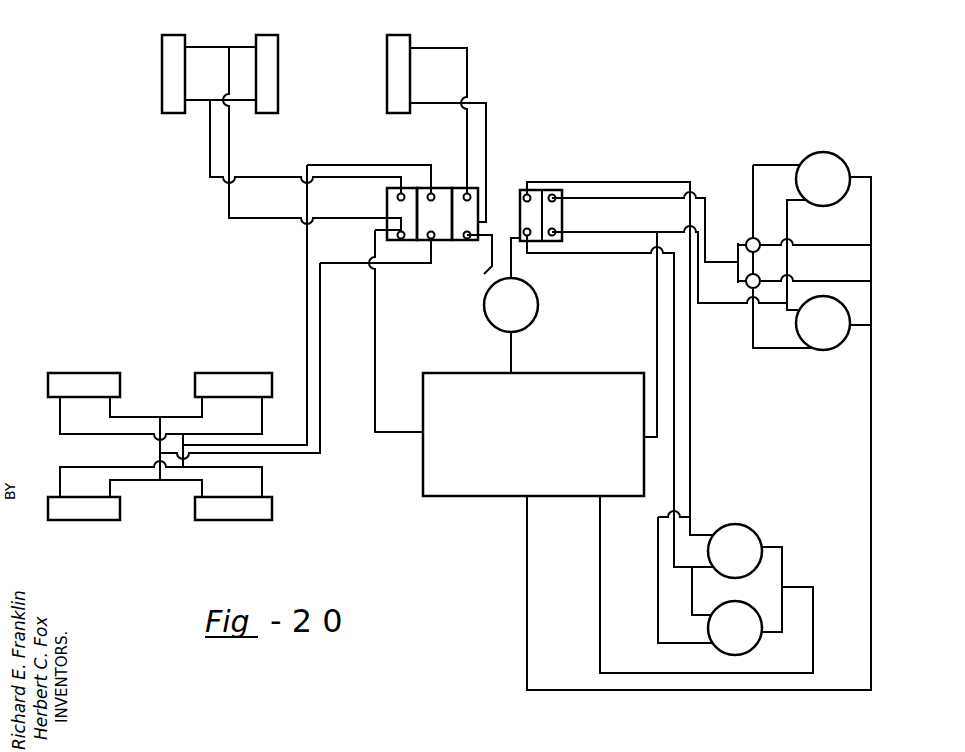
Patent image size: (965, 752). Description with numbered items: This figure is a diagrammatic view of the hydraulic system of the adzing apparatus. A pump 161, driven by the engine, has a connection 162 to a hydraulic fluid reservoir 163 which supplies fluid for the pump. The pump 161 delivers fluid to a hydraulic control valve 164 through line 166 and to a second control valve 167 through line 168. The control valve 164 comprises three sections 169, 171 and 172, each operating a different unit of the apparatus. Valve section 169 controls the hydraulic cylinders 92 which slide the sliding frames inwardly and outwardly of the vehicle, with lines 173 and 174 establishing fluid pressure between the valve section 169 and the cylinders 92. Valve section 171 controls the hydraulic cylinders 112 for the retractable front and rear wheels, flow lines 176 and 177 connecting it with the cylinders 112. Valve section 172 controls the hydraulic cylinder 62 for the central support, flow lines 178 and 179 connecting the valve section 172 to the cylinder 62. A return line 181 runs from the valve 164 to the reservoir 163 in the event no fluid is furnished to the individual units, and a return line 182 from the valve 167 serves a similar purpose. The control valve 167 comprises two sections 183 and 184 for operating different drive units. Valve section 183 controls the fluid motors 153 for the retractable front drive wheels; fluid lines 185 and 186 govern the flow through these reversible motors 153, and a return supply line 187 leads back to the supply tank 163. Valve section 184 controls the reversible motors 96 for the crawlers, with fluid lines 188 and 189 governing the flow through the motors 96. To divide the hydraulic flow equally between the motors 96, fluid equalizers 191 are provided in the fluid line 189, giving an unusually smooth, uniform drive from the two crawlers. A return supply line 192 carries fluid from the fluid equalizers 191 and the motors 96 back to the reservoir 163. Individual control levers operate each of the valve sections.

The hydraulic cylinders 92 is at (217, 74).
The hydraulic cylinder 62 is at (381, 74).
The line 173 is at (305, 147).
The line 174 is at (305, 149).
The flow line 178 is at (474, 162).
The flow line 179 is at (438, 121).
The valve section 169 is at (392, 217).
The valve section 171 is at (425, 218).
The valve section 172 is at (456, 217).
The control valve 167 is at (541, 195).
The valve section 184 is at (567, 215).
The valve section 183 is at (589, 193).
The hydraulic control valve 164 is at (401, 255).
The line 166 is at (473, 263).
The line 168 is at (537, 260).
The pump 161 is at (534, 305).
The connection 162 is at (533, 352).
The hydraulic fluid reservoir 163 is at (514, 443).
The return line 181 is at (398, 331).
The flow line 176 is at (262, 361).
The flow line 177 is at (307, 305).
The return line 182 is at (634, 334).
The fluid line 188 is at (669, 280).
The fluid line 189 is at (649, 227).
The fluid equalizers 191 is at (757, 252).
The fluid line 186 is at (632, 426).
The fluid line 185 is at (714, 358).
The return supply line 192 is at (730, 433).
The reversible motors 96 is at (814, 257).
The fluid motors 153 is at (727, 579).
The return supply line 187 is at (730, 584).
The hydraulic cylinders 112 is at (72, 394).